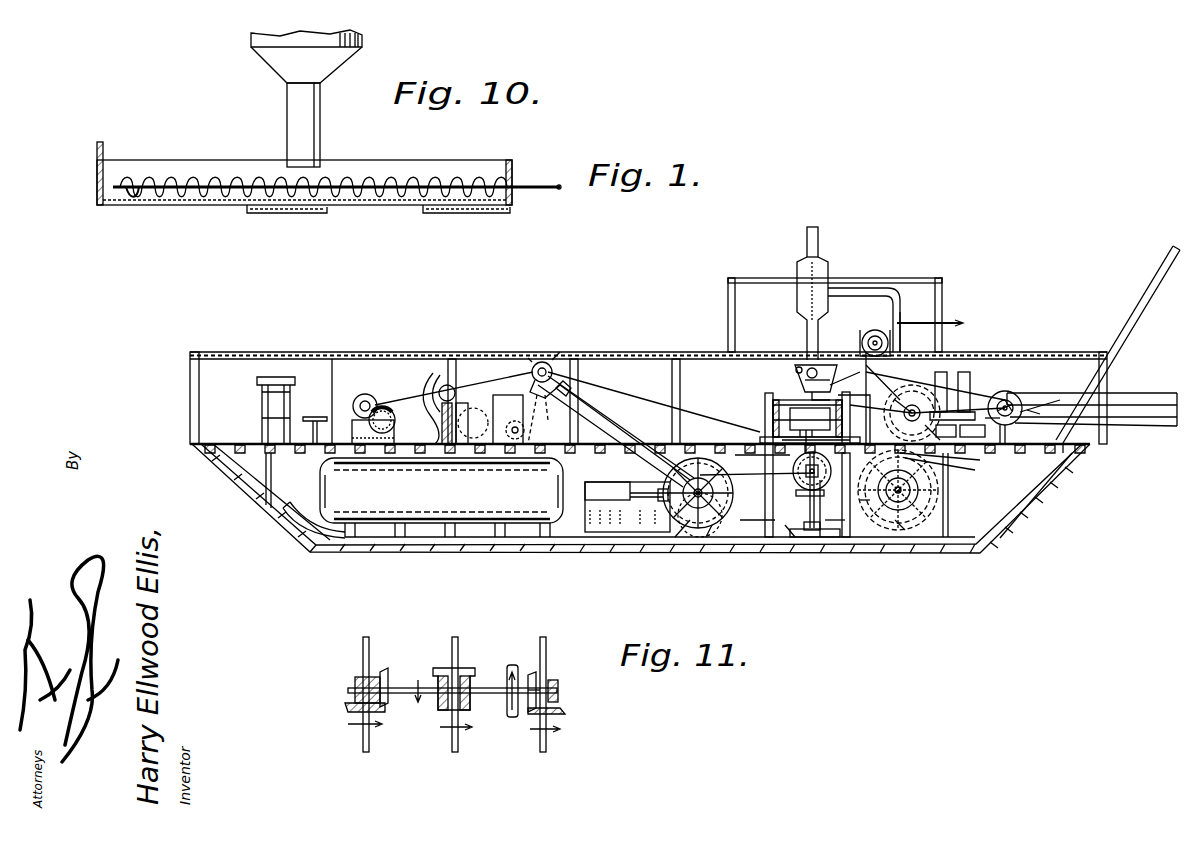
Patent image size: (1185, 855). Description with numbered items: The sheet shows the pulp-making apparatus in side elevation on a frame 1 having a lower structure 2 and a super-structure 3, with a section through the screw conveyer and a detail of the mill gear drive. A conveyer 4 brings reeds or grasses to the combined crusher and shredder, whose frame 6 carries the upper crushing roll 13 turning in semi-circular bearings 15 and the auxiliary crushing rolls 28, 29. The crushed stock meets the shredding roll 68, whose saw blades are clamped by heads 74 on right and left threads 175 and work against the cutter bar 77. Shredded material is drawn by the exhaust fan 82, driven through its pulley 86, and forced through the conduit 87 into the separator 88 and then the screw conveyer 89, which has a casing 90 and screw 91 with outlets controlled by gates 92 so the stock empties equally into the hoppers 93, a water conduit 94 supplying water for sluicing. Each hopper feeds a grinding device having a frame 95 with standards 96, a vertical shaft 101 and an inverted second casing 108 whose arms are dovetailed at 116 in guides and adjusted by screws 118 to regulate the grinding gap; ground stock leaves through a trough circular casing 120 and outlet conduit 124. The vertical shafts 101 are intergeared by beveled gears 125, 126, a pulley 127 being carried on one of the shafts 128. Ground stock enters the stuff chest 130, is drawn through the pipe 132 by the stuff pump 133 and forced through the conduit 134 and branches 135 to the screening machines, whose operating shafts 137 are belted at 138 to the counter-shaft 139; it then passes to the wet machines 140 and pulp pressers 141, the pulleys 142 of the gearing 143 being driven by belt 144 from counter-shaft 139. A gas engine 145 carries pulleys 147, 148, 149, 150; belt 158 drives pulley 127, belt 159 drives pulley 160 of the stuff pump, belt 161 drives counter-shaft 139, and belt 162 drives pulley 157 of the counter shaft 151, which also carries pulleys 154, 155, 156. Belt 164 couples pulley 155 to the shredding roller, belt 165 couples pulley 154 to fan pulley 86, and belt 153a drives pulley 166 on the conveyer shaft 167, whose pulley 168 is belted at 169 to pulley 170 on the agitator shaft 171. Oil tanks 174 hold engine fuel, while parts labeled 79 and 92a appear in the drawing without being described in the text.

In FIG. 1, the frame 1 is at (1030, 520).
In FIG. 1, the lower structure 2 is at (950, 508).
In FIG. 1, the super-structure 3 is at (608, 352).
In FIG. 1, the conveyer 4 is at (1050, 405).
In FIG. 1, the frame 6 is at (972, 430).
In FIG. 1, the upper crushing roll 13 is at (1070, 350).
In FIG. 1, the semi-circular bearings 15 is at (968, 378).
In FIG. 1, the auxiliary crushing roll 28 is at (947, 385).
In FIG. 1, the auxiliary crushing roll 29 is at (941, 432).
In FIG. 1, the shredding roll 68 is at (960, 410).
In FIG. 1, the circular cast iron heads 74 is at (1080, 393).
In FIG. 1, the cutter bar 77 is at (930, 385).
In FIG. 1, the bearing block 79 is at (946, 430).
In FIG. 1, the exhaust fan 82 is at (957, 469).
In FIG. 1, the pulley 86 is at (905, 420).
In FIG. 1, the conduit 87 is at (897, 303).
In FIG. 10, the separator 88 is at (325, 58).
In FIG. 1, the separator 88 is at (822, 270).
In FIG. 10, the screw conveyer 89 is at (370, 176).
In FIG. 1, the screw conveyer 89 is at (810, 382).
In FIG. 10, the casing 90 is at (420, 176).
In FIG. 1, the casing 90 is at (796, 372).
In FIG. 10, the screw 91 is at (395, 200).
In FIG. 10, the gates 92 is at (97, 178).
In FIG. 10, the trough bracket 92a is at (97, 205).
In FIG. 1, the hoppers 93 is at (797, 372).
In FIG. 1, the water conduit 94 is at (940, 323).
In FIG. 1, the frame 95 is at (850, 400).
In FIG. 1, the standards 96 is at (862, 403).
In FIG. 1, the vertical shaft 101 is at (814, 540).
In FIG. 11, the vertical shaft 101 is at (369, 738).
In FIG. 1, the second casing 108 is at (773, 408).
In FIG. 1, the dovetail 116 is at (810, 419).
In FIG. 1, the screws 118 is at (815, 392).
In FIG. 1, the trough circular casing 120 is at (810, 435).
In FIG. 1, the outlet conduit 124 is at (858, 540).
In FIG. 1, the beveled gears 125 is at (770, 474).
In FIG. 11, the beveled gears 125 is at (532, 675).
In FIG. 1, the beveled gears 126 is at (782, 440).
In FIG. 11, the beveled gears 126 is at (385, 672).
In FIG. 1, the pulley 127 is at (796, 495).
In FIG. 11, the pulley 127 is at (508, 680).
In FIG. 11, the shafts 128 is at (408, 693).
In FIG. 1, the stuff chest 130 is at (820, 495).
In FIG. 1, the conduit or pipe 132 is at (835, 540).
In FIG. 1, the stuff pump 133 is at (790, 540).
In FIG. 1, the conduit 134 is at (600, 425).
In FIG. 1, the branches 135 is at (580, 390).
In FIG. 1, the operating shafts 137 is at (518, 439).
In FIG. 1, the belting 138 is at (540, 425).
In FIG. 1, the counter-shaft 139 is at (542, 362).
In FIG. 1, the wet machines 140 is at (425, 415).
In FIG. 1, the pulp pressers 141 is at (310, 417).
In FIG. 1, the pulleys 142 is at (390, 412).
In FIG. 1, the operating gearing 143 is at (365, 394).
In FIG. 1, the belt 144 is at (452, 390).
In FIG. 1, the gas engine 145 is at (652, 502).
In FIG. 1, the pulley 147 is at (759, 452).
In FIG. 1, the pulley 148 is at (698, 458).
In FIG. 1, the pulley 149 is at (690, 537).
In FIG. 1, the pulley 150 is at (680, 537).
In FIG. 1, the counter shaft 151 is at (900, 320).
In FIG. 1, the belt 153a is at (1070, 360).
In FIG. 1, the pulley 154 is at (853, 395).
In FIG. 1, the pulley 155 is at (866, 370).
In FIG. 1, the pulley 156 is at (862, 335).
In FIG. 1, the pulley 157 is at (875, 330).
In FIG. 1, the belt 158 is at (810, 493).
In FIG. 1, the belt 159 is at (712, 537).
In FIG. 1, the pulley 160 is at (748, 537).
In FIG. 1, the belt 161 is at (625, 430).
In FIG. 1, the belt 162 is at (773, 425).
In FIG. 1, the belt 164 is at (880, 378).
In FIG. 1, the belt 165 is at (900, 406).
In FIG. 1, the pulley 166 is at (990, 418).
In FIG. 1, the shaft 167 is at (1022, 418).
In FIG. 1, the pulley 168 is at (970, 395).
In FIG. 1, the belt 169 is at (959, 459).
In FIG. 1, the pulley 170 is at (918, 488).
In FIG. 1, the shaft 171 is at (900, 540).
In FIG. 1, the oil tanks 174 is at (441, 497).
In FIG. 1, the right and left threads 175 is at (841, 382).